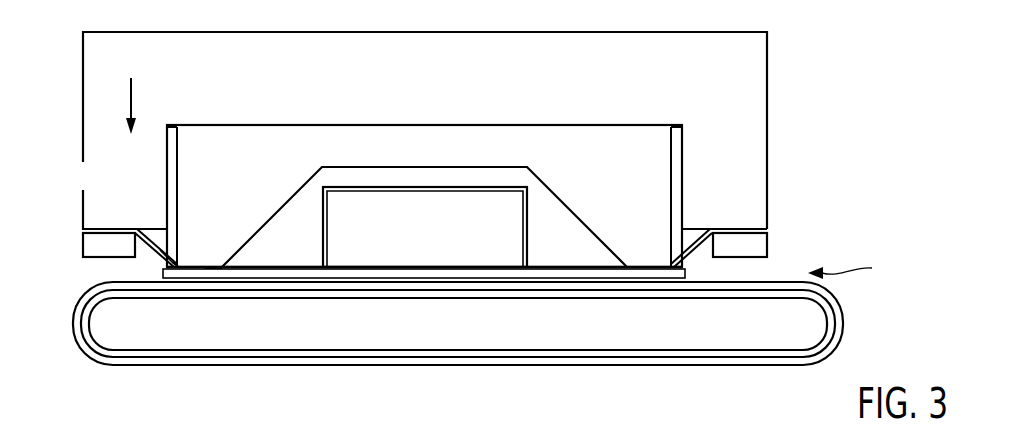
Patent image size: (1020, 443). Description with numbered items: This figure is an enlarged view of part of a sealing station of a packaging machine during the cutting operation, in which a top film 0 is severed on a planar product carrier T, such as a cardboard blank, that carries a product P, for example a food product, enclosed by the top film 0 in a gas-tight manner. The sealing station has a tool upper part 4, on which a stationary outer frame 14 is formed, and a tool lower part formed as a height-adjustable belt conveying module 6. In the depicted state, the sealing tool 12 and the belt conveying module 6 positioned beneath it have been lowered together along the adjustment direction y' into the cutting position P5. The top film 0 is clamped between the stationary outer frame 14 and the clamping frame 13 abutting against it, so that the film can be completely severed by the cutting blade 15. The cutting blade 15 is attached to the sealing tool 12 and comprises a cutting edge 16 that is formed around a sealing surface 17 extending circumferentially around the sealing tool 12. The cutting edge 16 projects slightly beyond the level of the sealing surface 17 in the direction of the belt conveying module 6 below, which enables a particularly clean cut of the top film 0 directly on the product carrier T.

The tool upper part 4 is at (679, 88).
The outer frame 14 is at (768, 160).
The clamping frame 13 is at (768, 243).
The sealing tool 12 is at (458, 135).
The cutting blade 15 is at (165, 150).
The product P is at (499, 228).
The product carrier T is at (572, 275).
The cutting edge 16 is at (190, 268).
The sealing surface 17 is at (212, 268).
The belt conveying module 6 is at (790, 329).
The top film 0 is at (160, 253).
The cutting position P5 is at (855, 269).
The adjustment direction y' is at (120, 88).